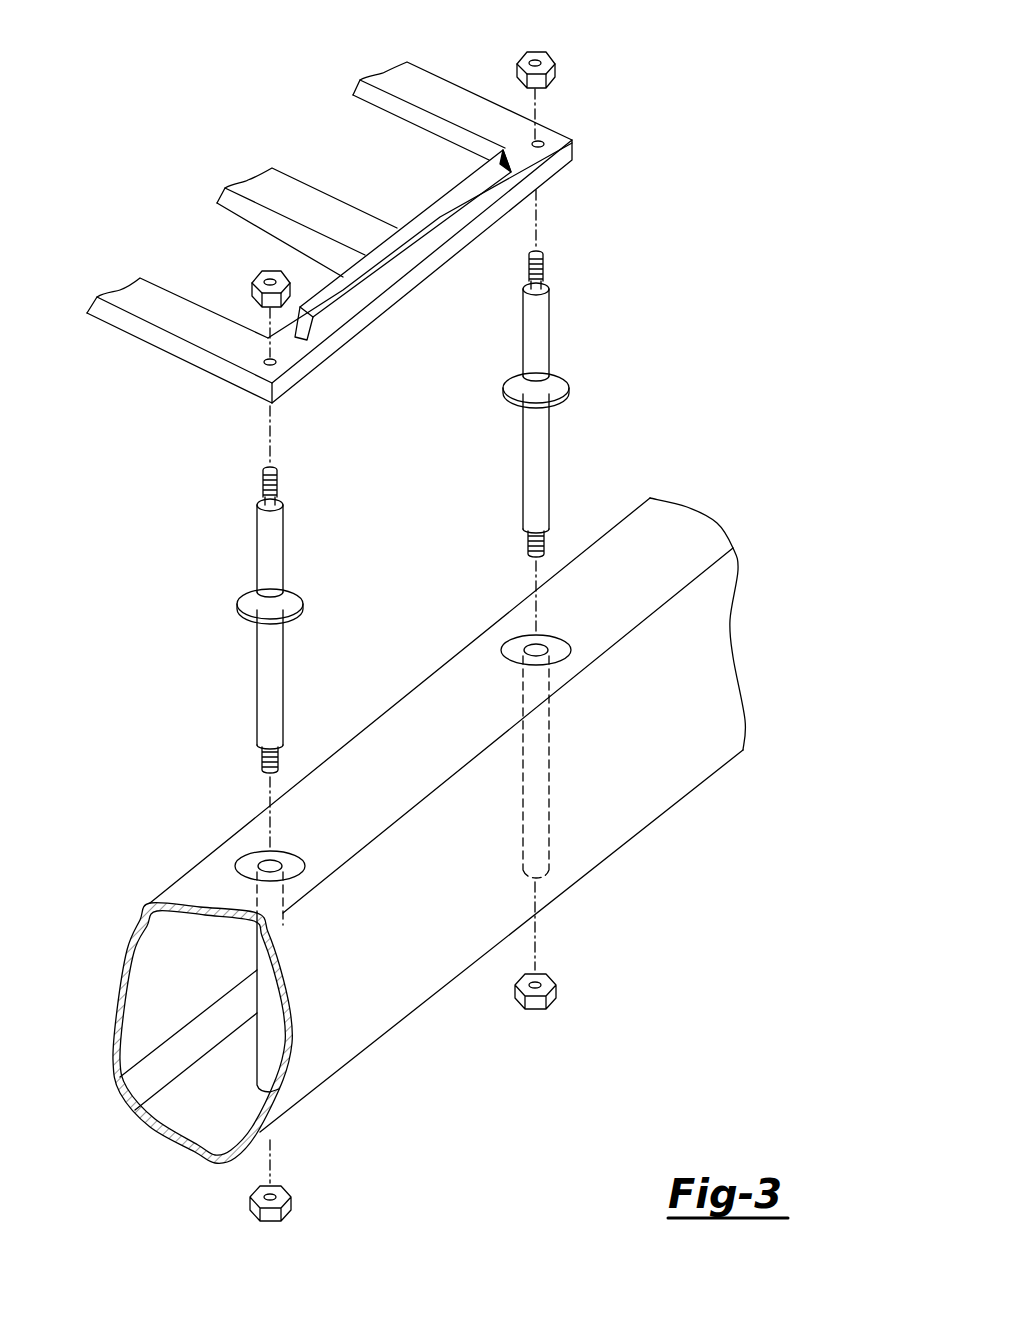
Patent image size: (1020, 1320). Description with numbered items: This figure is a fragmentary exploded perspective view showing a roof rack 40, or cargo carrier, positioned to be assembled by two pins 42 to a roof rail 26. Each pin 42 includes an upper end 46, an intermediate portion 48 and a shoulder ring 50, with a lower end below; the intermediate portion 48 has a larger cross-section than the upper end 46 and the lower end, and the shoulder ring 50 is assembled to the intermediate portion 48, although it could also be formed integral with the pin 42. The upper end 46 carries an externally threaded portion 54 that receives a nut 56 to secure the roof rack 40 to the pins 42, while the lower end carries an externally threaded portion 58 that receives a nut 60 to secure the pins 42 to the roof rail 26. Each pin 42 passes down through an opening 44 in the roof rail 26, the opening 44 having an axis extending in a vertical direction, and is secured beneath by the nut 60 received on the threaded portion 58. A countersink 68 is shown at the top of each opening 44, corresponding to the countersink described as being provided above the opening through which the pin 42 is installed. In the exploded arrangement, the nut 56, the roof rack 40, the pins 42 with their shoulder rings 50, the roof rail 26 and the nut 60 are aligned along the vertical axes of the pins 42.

The roof rail 26 is at (655, 772).
The roof rack 40 is at (418, 122).
The pin 42 is at (396, 519).
The opening 44 is at (275, 863).
The upper end 46 is at (277, 503).
The intermediate portion 48 is at (277, 549).
The shoulder ring 50 is at (255, 612).
The externally threaded portion 54 is at (278, 477).
The nut 56 is at (258, 272).
The externally threaded portion 58 is at (262, 763).
The nut 60 is at (283, 1186).
The countersink 68 is at (240, 858).